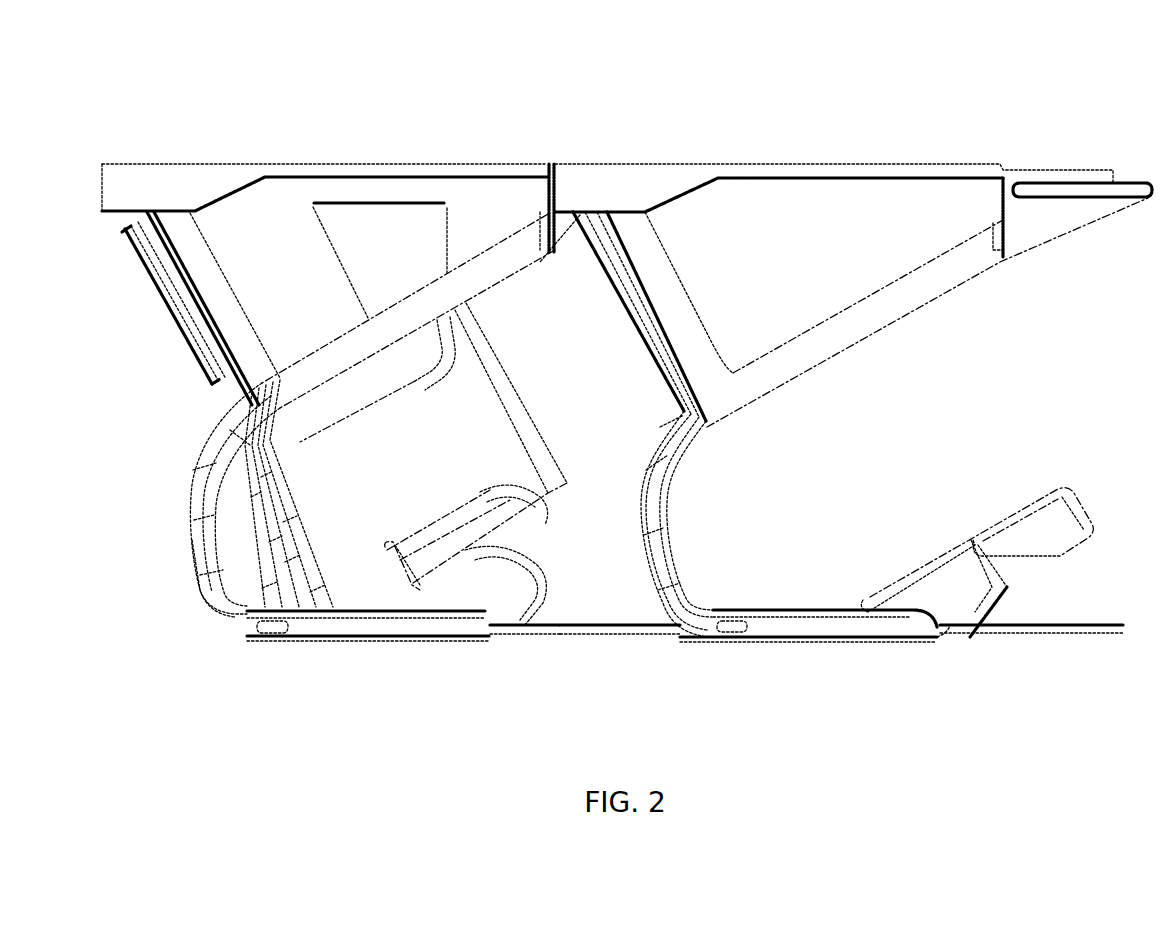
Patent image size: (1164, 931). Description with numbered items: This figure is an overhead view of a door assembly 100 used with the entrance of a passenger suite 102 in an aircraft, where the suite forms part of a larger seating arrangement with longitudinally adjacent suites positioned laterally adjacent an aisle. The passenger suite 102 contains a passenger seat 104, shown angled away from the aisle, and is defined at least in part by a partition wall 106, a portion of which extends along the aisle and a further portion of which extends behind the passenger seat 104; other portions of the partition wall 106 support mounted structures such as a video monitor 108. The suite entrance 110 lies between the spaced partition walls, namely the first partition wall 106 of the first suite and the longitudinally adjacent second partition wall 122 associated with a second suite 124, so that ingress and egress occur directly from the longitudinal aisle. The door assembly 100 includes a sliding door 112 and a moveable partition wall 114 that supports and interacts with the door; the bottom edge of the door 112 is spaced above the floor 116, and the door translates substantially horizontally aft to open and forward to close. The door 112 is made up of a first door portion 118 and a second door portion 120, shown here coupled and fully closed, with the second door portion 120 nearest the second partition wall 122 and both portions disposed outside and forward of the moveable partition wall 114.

The door assembly 100 is at (787, 643).
The passenger suite 102 is at (421, 158).
The passenger seat 104 is at (287, 462).
The partition wall 106 is at (240, 622).
The video monitor 108 is at (176, 308).
The suite entrance 110 is at (615, 632).
The sliding door 112 is at (535, 632).
The moveable partition wall 114 is at (373, 628).
The floor 116 is at (581, 579).
The first door portion 118 is at (596, 632).
The second door portion 120 is at (655, 634).
The second partition wall 122 is at (762, 632).
The second suite 124 is at (812, 158).